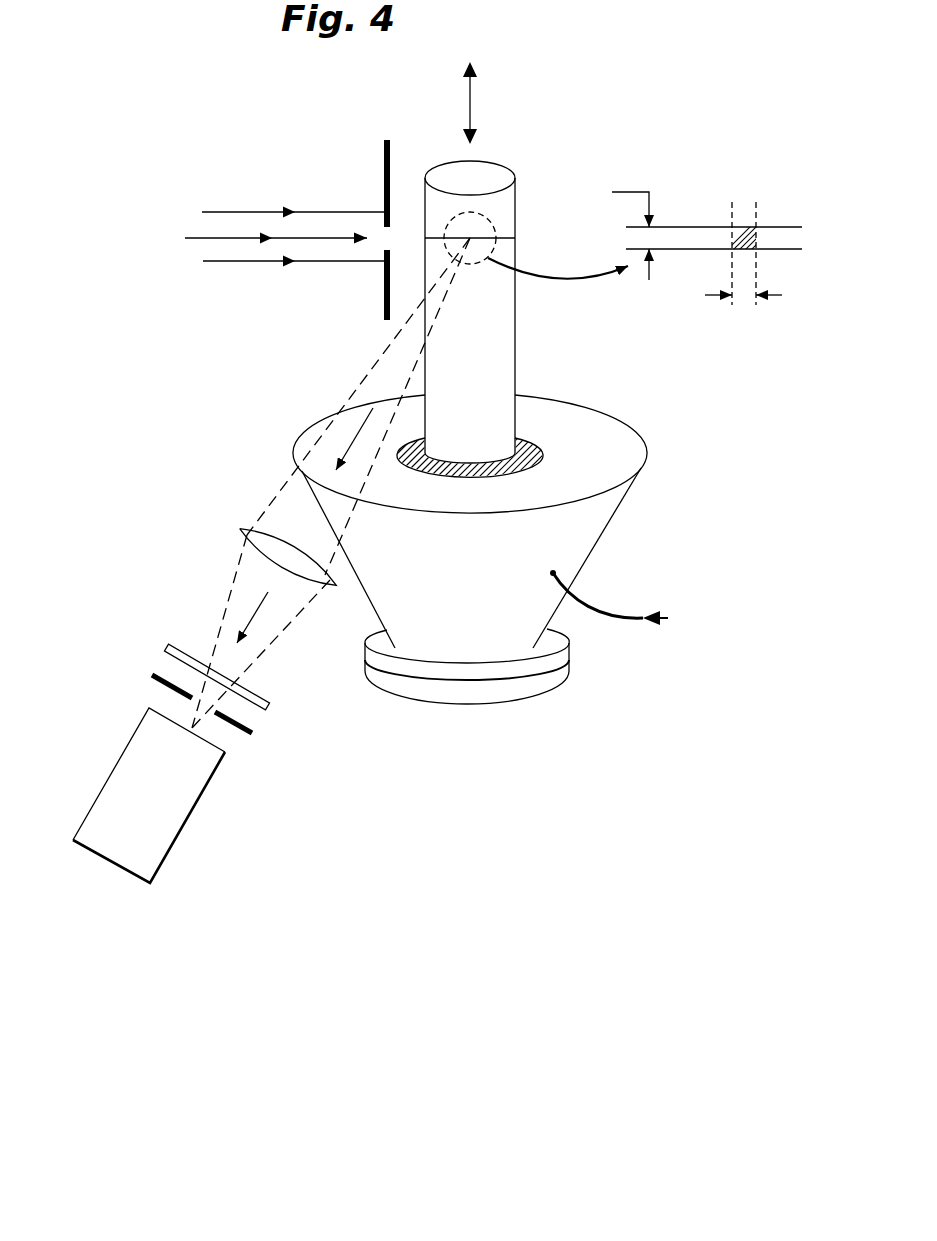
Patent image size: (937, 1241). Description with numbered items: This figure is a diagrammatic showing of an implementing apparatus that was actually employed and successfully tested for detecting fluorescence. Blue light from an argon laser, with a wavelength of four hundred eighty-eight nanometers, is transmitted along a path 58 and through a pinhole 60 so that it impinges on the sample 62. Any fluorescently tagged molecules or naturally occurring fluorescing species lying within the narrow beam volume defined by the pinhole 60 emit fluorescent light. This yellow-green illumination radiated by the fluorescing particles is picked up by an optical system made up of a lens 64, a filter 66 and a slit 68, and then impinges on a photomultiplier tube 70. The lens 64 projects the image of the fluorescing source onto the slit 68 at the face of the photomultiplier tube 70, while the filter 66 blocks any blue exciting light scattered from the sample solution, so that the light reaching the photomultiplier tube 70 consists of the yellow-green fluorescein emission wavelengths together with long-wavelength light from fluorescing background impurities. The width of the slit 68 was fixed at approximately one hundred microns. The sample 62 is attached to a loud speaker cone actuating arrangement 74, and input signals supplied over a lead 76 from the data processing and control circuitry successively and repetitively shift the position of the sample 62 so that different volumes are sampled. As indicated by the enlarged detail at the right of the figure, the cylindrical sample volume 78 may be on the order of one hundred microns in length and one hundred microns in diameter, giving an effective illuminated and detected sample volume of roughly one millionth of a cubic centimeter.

The path 58 is at (288, 237).
The pinhole 60 is at (385, 237).
The sample 62 is at (517, 330).
The lens 64 is at (248, 530).
The filter 66 is at (257, 693).
The slit 68 is at (243, 736).
The photomultiplier tube 70 is at (112, 772).
The loud speaker cone actuating arrangement 74 is at (610, 512).
The lead 76 is at (622, 608).
The illuminated scattering volume 78 is at (753, 228).